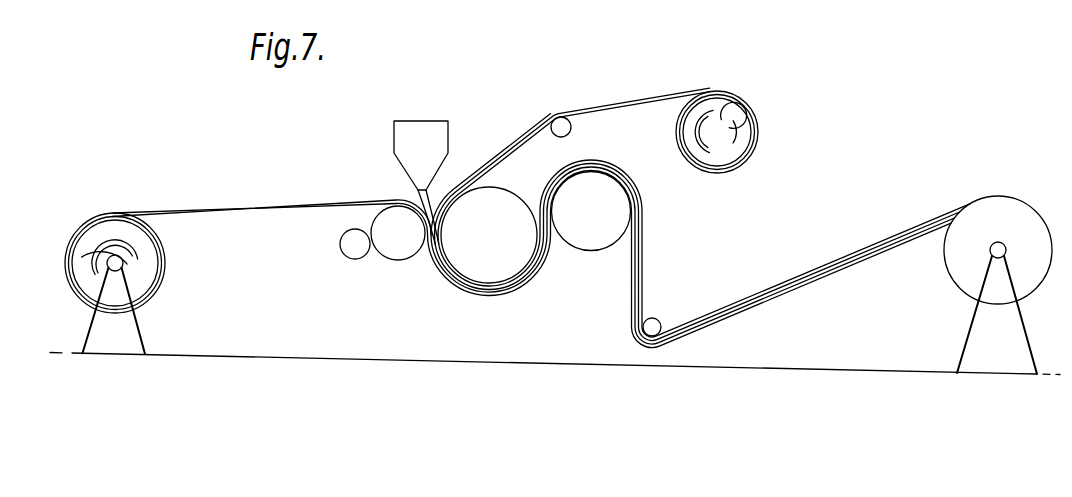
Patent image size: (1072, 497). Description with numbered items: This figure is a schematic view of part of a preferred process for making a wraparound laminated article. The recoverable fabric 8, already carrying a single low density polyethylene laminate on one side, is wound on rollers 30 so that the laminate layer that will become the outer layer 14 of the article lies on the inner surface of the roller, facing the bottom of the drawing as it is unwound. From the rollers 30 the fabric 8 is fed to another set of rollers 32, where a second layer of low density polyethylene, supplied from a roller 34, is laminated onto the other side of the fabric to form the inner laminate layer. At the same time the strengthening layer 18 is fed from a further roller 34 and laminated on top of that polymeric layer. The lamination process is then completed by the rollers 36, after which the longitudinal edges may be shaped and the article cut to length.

The fabric 8 is at (541, 254).
The outermost layer 14 is at (266, 203).
The strengthening layer 18 is at (612, 103).
The rollers 30 is at (153, 257).
The rollers 32 is at (398, 250).
The roller 34 is at (443, 127).
The rollers 36 is at (611, 216).